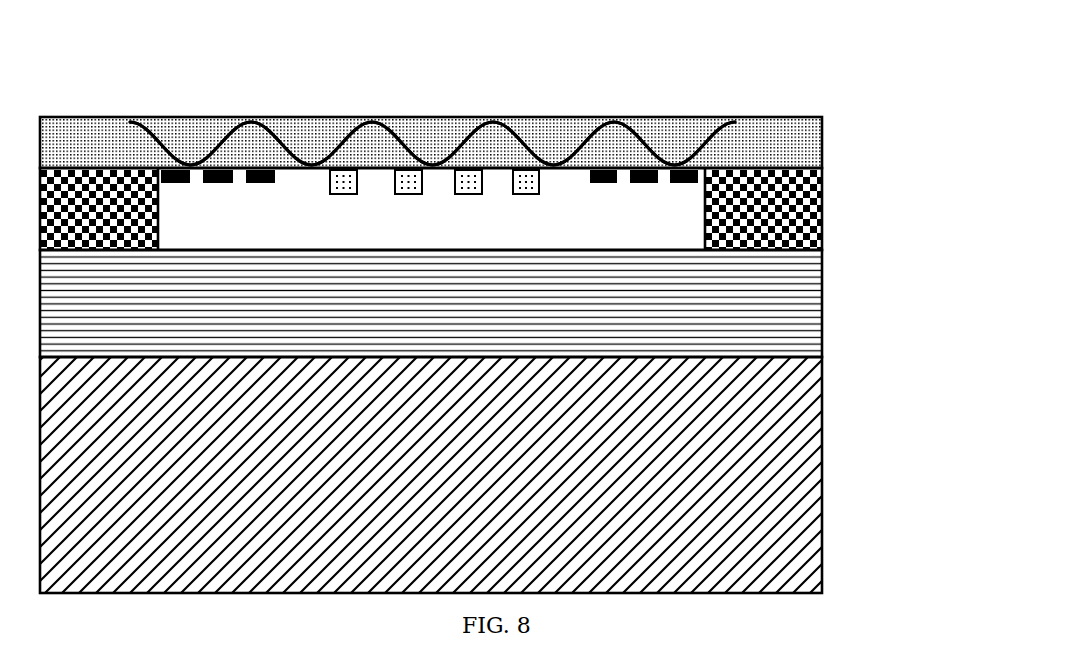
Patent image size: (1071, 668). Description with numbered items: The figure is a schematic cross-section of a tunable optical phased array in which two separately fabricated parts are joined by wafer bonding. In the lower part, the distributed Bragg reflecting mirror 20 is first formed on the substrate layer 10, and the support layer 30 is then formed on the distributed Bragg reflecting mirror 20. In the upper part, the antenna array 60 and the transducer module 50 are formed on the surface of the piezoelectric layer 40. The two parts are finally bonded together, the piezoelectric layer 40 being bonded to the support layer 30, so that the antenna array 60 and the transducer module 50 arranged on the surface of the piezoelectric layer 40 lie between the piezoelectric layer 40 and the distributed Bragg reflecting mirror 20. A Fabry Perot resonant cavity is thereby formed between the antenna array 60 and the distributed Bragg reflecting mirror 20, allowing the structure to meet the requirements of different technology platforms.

The substrate layer 10 is at (805, 468).
The distributed Bragg reflecting mirror 20 is at (788, 307).
The support layer 30 is at (805, 207).
The piezoelectric layer 40 is at (800, 152).
The transducer module 50 is at (617, 115).
The antenna array 60 is at (490, 117).